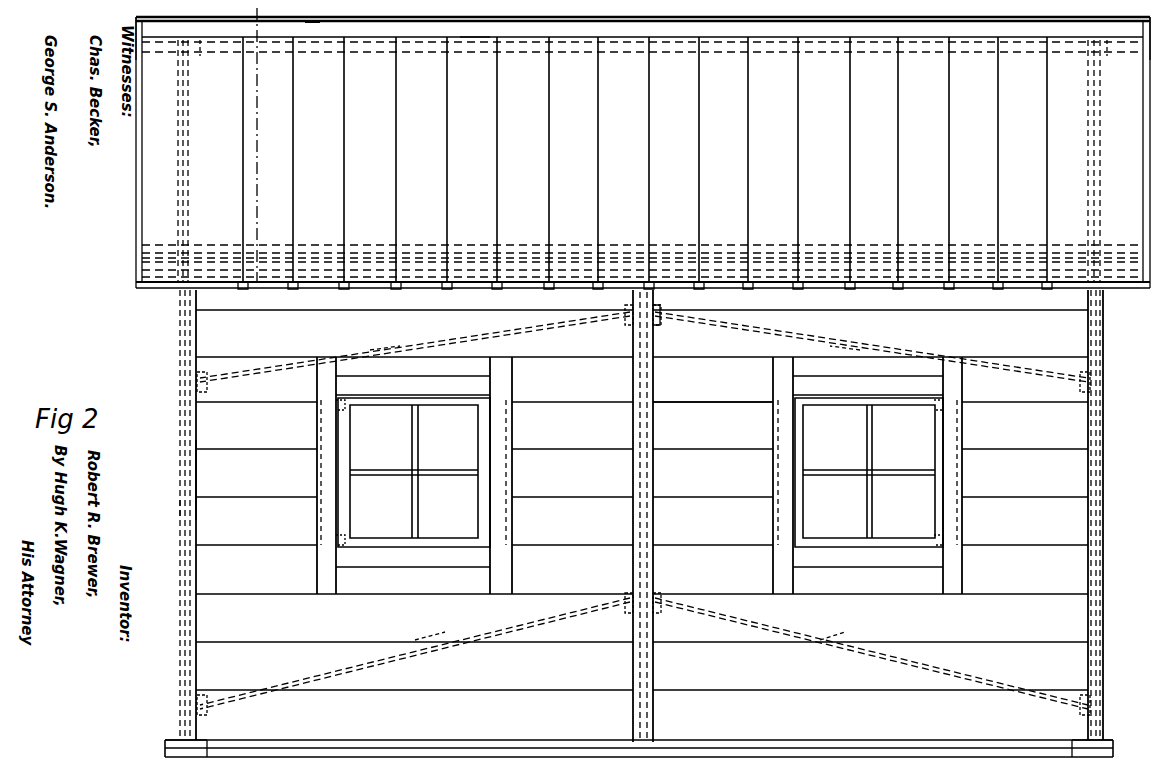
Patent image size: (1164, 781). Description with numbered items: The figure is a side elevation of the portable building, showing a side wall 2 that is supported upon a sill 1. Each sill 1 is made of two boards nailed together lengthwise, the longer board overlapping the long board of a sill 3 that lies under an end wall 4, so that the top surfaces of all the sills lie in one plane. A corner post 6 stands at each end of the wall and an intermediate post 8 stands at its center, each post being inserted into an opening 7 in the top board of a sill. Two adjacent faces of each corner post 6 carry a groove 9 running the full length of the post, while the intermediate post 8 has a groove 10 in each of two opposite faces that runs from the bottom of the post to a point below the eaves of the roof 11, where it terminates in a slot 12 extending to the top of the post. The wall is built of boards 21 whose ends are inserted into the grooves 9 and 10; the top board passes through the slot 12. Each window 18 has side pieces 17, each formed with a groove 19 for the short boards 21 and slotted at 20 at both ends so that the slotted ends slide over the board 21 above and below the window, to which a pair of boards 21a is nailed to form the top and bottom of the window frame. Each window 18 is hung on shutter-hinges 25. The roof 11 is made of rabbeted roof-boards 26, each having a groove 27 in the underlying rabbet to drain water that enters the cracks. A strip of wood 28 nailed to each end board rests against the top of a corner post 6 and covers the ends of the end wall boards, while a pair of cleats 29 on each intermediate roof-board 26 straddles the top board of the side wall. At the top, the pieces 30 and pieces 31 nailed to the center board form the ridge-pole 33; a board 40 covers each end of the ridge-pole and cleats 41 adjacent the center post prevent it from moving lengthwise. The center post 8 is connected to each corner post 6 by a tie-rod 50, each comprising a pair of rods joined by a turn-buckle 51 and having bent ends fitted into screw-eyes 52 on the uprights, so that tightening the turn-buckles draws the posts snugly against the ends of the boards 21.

The sill 1 is at (290, 750).
The side wall 2 is at (642, 500).
The sill 3 is at (200, 757).
The end wall 4 is at (181, 506).
The corner post 6 is at (180, 470).
The opening 7 is at (166, 746).
The intermediate post 8 is at (262, 151).
The groove 9 is at (196, 480).
The groove 10 is at (633, 660).
The roof 11 is at (643, 152).
The slot 12 is at (658, 316).
The side piece 17 is at (345, 435).
The window 18 is at (642, 471).
The groove 19 is at (320, 467).
The slotted end 20 is at (335, 405).
The board 21 is at (713, 422).
The pair of boards 21a is at (385, 395).
The shutter-hinge 25 is at (340, 406).
The roof-board 26 is at (645, 159).
The groove 27 is at (345, 287).
The strip of wood 28 is at (185, 228).
The cleat 29 is at (418, 255).
The piece 30 is at (313, 24).
The piece 31 is at (473, 54).
The ridge-pole 33 is at (510, 26).
The board 40 is at (141, 50).
The cleat 41 is at (187, 50).
The tie-rod 50 is at (425, 346).
The turn-buckle 51 is at (380, 342).
The screw-eye 52 is at (210, 385).